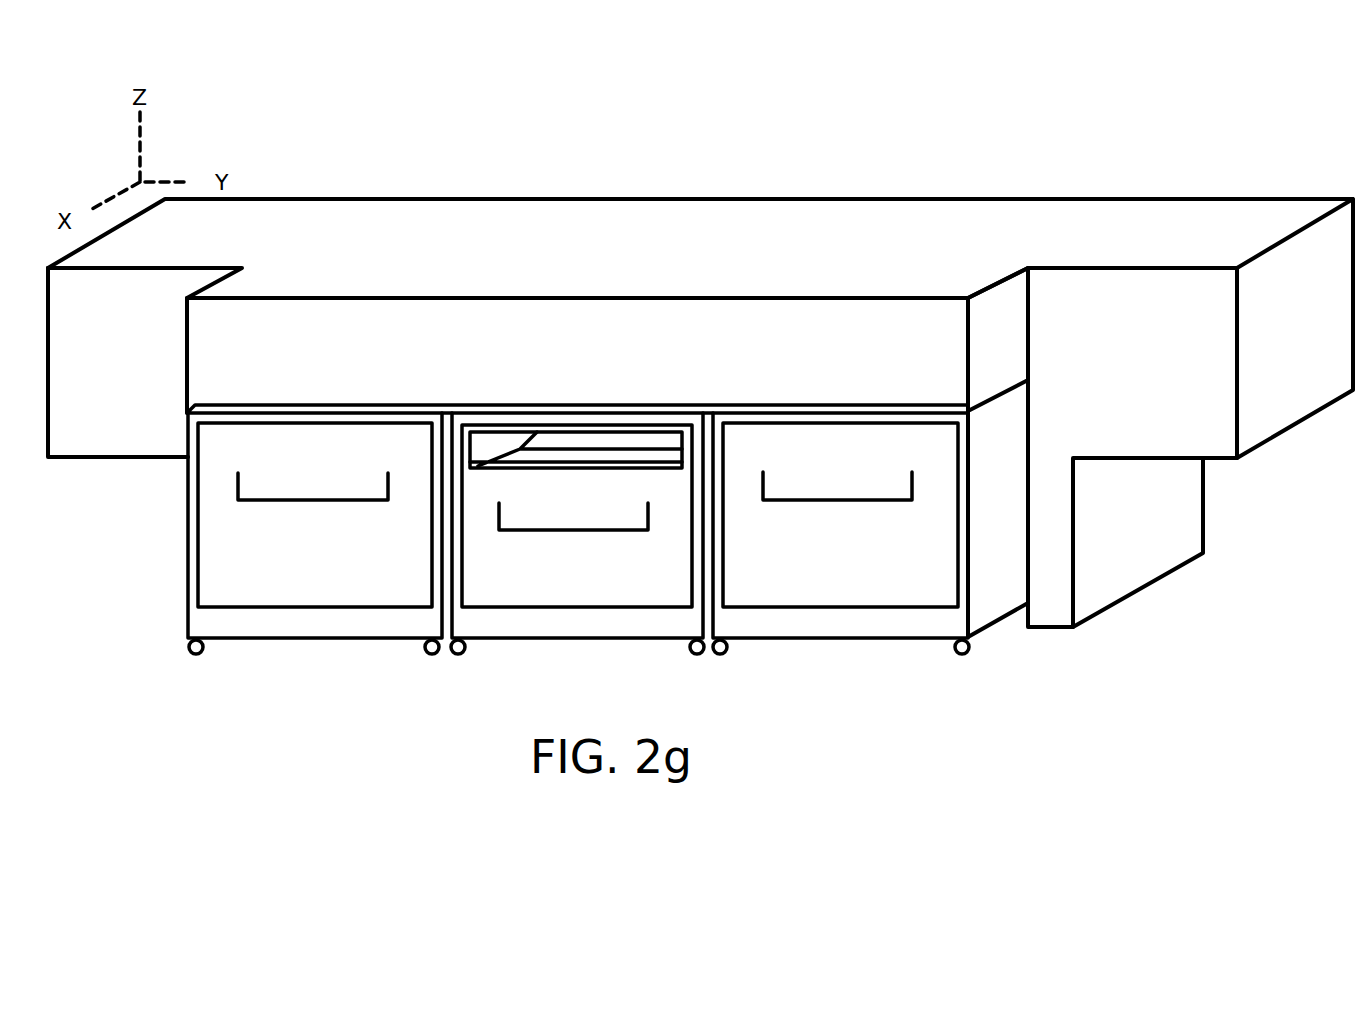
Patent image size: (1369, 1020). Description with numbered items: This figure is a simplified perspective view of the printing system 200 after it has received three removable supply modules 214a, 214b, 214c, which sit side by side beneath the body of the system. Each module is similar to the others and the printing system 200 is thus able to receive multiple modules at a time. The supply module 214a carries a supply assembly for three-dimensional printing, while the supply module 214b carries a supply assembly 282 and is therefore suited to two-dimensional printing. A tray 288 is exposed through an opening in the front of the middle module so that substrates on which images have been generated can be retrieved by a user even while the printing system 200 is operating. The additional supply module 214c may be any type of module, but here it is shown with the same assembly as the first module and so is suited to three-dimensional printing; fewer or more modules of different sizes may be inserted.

The printing system 200 is at (1060, 172).
The supply module 214a is at (299, 557).
The supply module 214b is at (557, 535).
The supply module 214c is at (823, 557).
The supply assembly 282 is at (635, 603).
The tray 288 is at (620, 460).